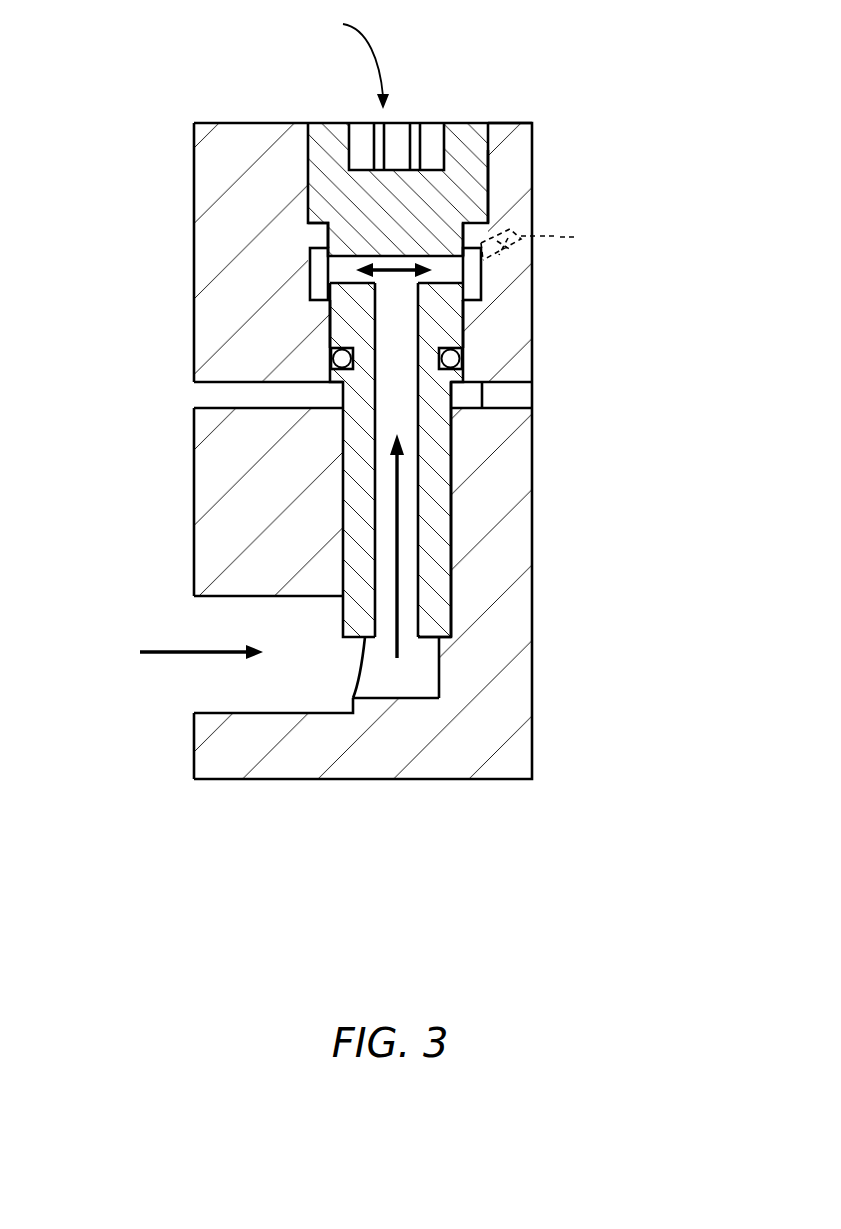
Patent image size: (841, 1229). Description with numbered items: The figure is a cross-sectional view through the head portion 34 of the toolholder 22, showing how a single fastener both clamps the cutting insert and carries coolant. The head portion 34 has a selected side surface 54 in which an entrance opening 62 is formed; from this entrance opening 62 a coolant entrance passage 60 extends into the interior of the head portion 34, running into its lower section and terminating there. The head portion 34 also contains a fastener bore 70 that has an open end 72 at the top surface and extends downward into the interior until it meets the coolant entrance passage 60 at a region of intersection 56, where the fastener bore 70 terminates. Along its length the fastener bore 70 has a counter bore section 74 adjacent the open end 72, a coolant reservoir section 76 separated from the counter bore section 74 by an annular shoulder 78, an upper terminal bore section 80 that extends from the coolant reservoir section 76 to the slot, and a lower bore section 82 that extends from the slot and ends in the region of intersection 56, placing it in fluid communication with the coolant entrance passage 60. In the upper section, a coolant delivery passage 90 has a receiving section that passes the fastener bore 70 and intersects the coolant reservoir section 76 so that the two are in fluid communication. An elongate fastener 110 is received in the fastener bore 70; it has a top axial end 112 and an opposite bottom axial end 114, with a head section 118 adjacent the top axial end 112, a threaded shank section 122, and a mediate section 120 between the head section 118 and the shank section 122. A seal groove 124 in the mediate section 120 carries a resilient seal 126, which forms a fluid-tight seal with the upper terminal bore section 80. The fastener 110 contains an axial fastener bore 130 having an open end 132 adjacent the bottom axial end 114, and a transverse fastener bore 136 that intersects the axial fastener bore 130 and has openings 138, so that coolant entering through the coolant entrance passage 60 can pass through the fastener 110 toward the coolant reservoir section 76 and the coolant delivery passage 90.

The toolholder 22 is at (612, 442).
The head portion 34 is at (532, 123).
The side surface 54 is at (194, 567).
The region of intersection 56 is at (420, 678).
The coolant entrance passage 60 is at (288, 680).
The entrance opening 62 is at (194, 690).
The fastener bore 70 is at (462, 444).
The open end 72 is at (327, 122).
The counter bore section 74 is at (490, 167).
The coolant reservoir section 76 is at (472, 282).
The annular shoulder 78 is at (317, 238).
The upper terminal bore section 80 is at (333, 333).
The lower bore section 82 is at (452, 582).
The coolant delivery passage 90 is at (544, 242).
The elongate fastener 110 is at (343, 58).
The top axial end 112 is at (463, 122).
The bottom axial end 114 is at (440, 642).
The head section 118 is at (463, 150).
The mediate section 120 is at (438, 315).
The threaded shank section 122 is at (433, 485).
The seal groove 124 is at (450, 358).
The resilient seal 126 is at (440, 348).
The axial fastener bore 130 is at (385, 512).
The open end 132 is at (385, 675).
The transverse fastener bore 136 is at (438, 263).
The openings 138 is at (313, 265).